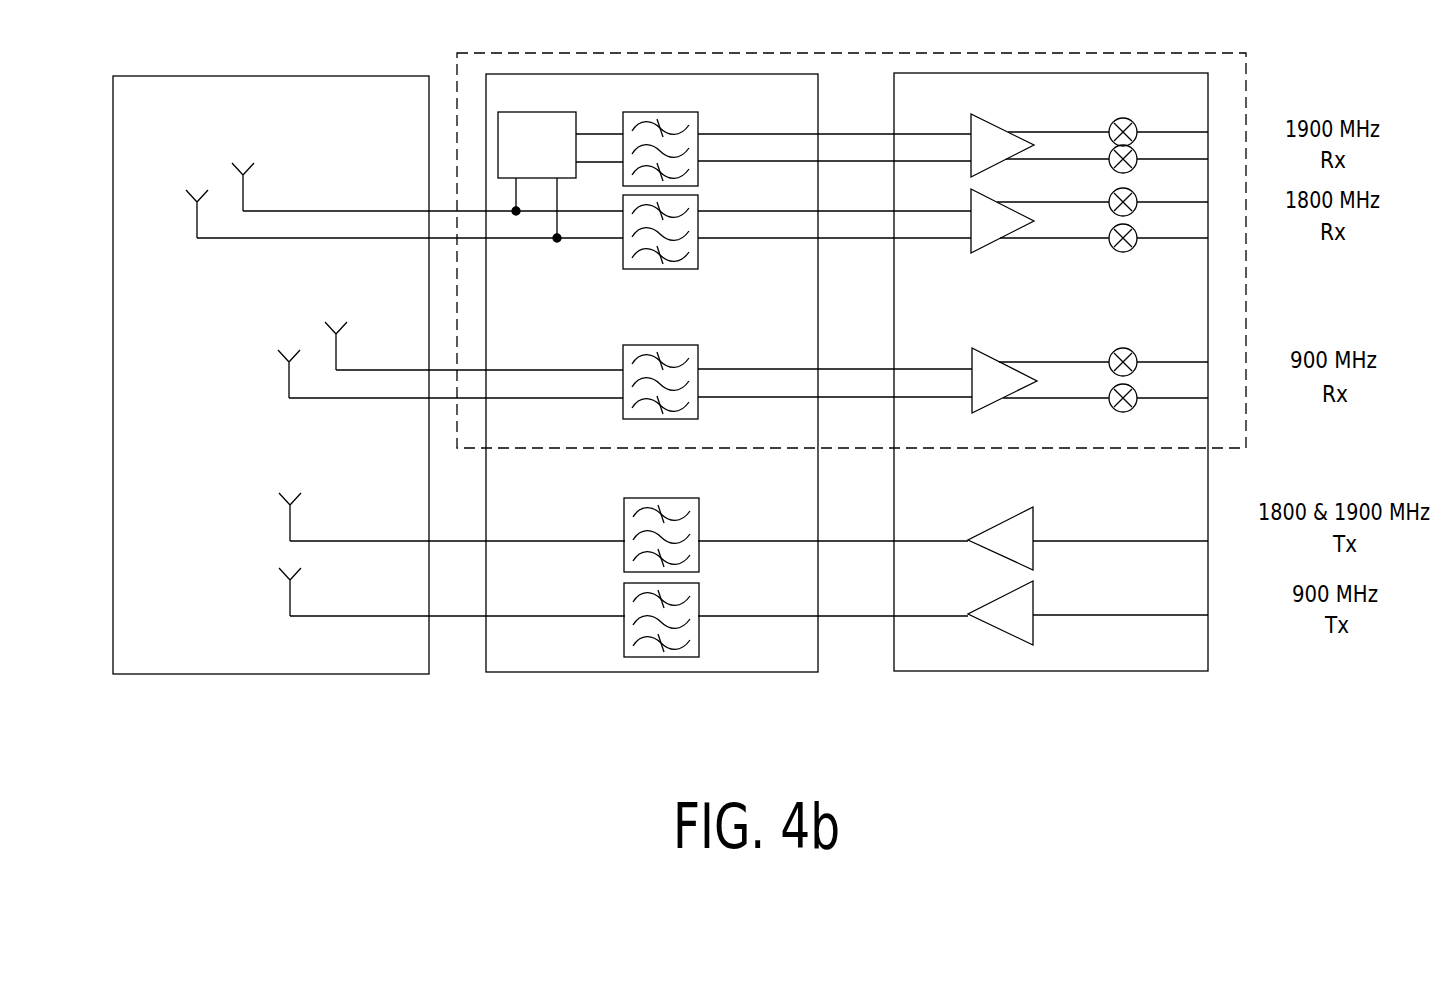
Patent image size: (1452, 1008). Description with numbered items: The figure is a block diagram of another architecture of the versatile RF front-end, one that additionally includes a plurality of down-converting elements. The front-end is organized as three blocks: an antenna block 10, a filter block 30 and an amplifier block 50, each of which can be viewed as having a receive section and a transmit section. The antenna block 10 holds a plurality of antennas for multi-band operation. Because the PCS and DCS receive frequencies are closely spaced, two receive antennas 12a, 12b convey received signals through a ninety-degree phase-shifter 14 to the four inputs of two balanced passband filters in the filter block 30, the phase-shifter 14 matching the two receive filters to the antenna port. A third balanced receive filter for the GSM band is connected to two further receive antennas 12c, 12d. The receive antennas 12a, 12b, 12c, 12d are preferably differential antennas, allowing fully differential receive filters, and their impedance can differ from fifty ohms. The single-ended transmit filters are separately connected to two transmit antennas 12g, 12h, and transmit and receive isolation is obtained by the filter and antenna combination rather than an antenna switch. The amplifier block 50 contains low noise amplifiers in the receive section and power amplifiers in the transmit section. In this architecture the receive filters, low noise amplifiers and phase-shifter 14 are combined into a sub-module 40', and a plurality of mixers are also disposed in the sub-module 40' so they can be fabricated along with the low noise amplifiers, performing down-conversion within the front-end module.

The antenna block 10 is at (272, 674).
The Rx antenna 12a is at (243, 198).
The Rx antenna 12b is at (197, 226).
The Rx antenna 12c is at (336, 355).
The Rx antenna 12d is at (289, 385).
The Tx antenna 12g is at (290, 528).
The Tx antenna 12h is at (290, 603).
The 90° phase-shifter 14 is at (537, 112).
The filter block 30 is at (662, 672).
The sub-module 40' is at (851, 232).
The amplifier block 50 is at (1050, 670).